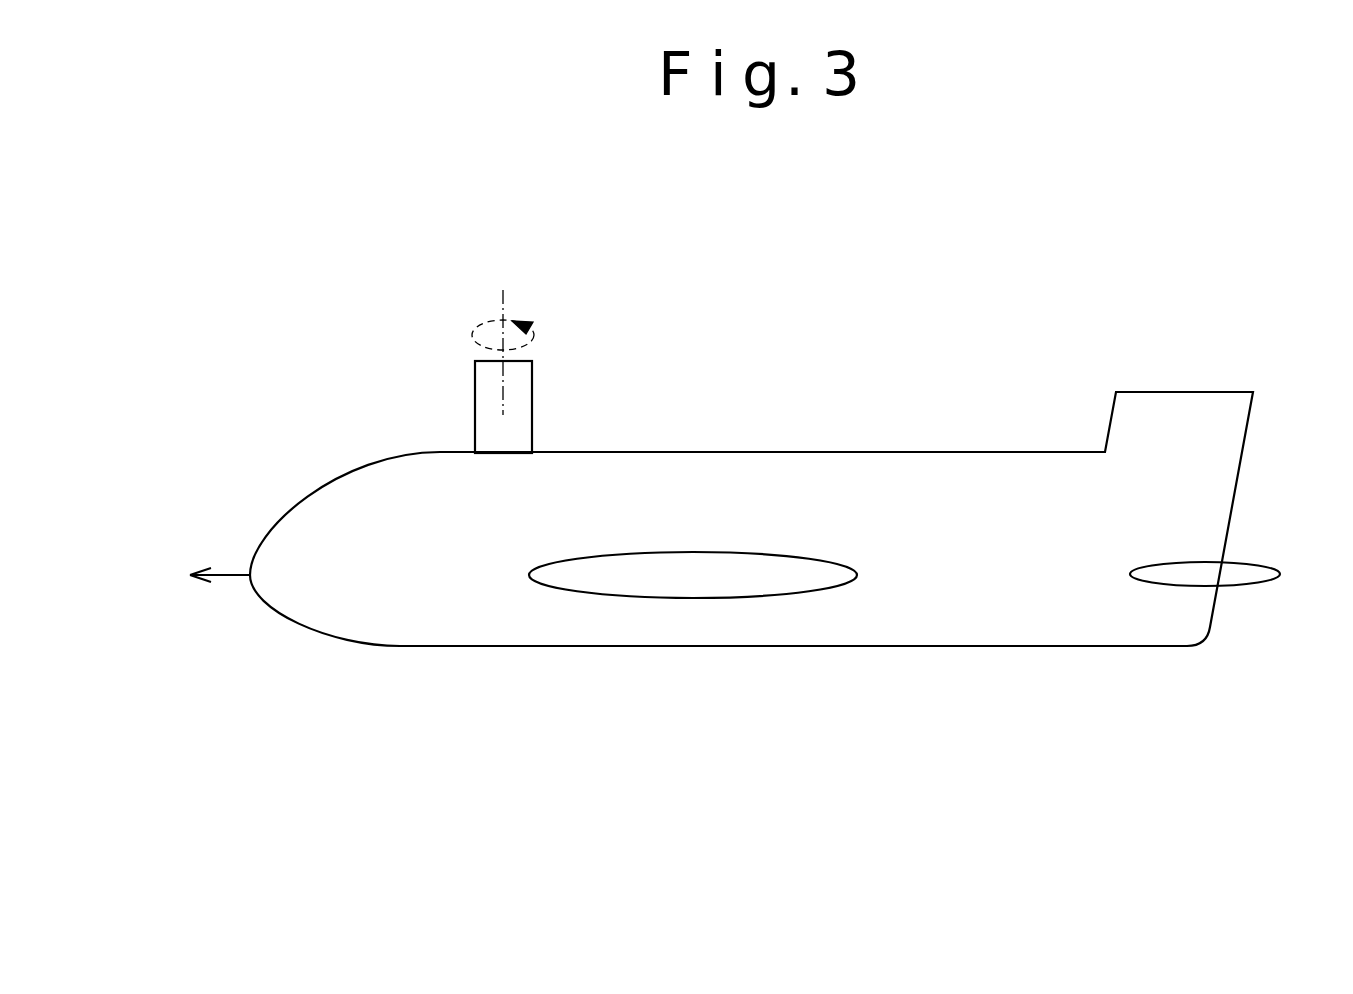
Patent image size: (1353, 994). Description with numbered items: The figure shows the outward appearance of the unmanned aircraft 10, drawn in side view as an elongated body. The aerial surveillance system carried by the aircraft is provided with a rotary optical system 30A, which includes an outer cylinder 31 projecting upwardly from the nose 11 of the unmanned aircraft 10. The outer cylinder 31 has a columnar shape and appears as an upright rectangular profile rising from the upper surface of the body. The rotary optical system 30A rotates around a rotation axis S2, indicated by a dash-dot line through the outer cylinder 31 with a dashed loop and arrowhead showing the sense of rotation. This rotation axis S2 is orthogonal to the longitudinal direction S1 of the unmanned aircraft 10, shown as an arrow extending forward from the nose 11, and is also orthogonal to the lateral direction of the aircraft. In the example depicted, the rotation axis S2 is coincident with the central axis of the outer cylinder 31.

The unmanned aircraft 10 is at (735, 408).
The nose 11 is at (437, 452).
The rotary optical system 30A is at (560, 362).
The outer cylinder 31 is at (532, 420).
The longitudinal direction S1 is at (220, 575).
The rotation axis S2 is at (507, 305).